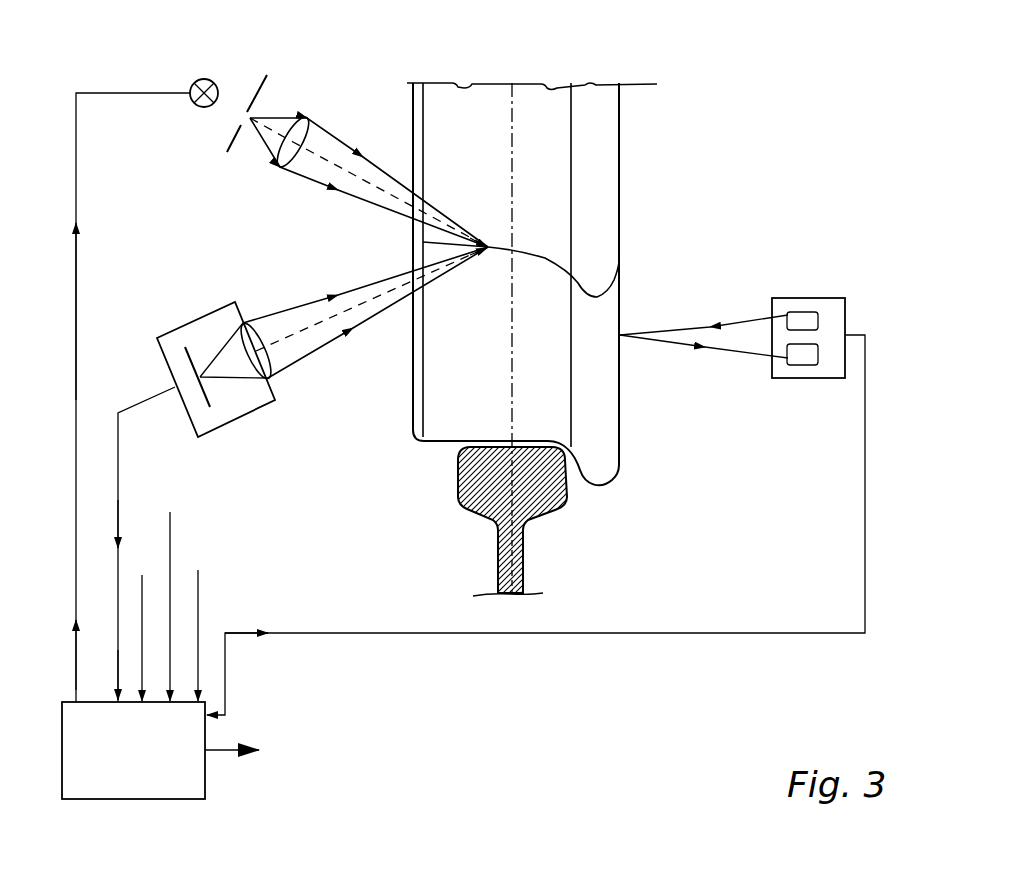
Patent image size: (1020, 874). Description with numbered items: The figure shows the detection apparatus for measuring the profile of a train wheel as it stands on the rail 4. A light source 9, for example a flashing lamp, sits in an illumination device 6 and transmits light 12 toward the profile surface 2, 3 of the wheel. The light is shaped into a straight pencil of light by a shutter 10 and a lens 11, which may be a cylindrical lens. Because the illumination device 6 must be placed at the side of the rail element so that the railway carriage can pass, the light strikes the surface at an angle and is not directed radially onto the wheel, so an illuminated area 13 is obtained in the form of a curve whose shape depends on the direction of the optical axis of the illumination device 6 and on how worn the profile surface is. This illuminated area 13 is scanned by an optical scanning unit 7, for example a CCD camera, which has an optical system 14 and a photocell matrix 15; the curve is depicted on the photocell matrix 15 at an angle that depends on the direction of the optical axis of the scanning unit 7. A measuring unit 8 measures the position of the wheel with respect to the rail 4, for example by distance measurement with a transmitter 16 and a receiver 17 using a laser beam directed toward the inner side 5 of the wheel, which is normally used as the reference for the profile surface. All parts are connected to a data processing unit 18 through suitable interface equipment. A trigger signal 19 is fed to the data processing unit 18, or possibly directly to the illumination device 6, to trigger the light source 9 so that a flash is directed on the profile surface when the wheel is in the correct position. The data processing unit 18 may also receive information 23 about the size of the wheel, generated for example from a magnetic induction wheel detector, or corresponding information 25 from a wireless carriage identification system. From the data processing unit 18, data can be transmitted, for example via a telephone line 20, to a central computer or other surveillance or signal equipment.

The profile surface 2 is at (539, 154).
The profile surface 3 is at (610, 483).
The rail 4 is at (523, 493).
The inner side of the wheel 5 is at (620, 420).
The illumination device 6 is at (264, 64).
The optical scanning unit 7 is at (248, 440).
The measuring unit 8 is at (797, 272).
The light source 9 is at (198, 77).
The shutter 10 is at (230, 142).
The lens 11 is at (305, 120).
The light 12 is at (345, 148).
The illuminated area 13 is at (523, 250).
The optical system 14 is at (253, 325).
The photocell matrix 15 is at (200, 393).
The transmitter 16 is at (808, 313).
The receiver 17 is at (800, 360).
The data processing unit 18 is at (117, 766).
The trigger signal 19 is at (140, 620).
The telephone line 20 is at (252, 751).
The information concerning the size of the wheel 23 is at (168, 591).
The information from carriage identification system 25 is at (200, 620).